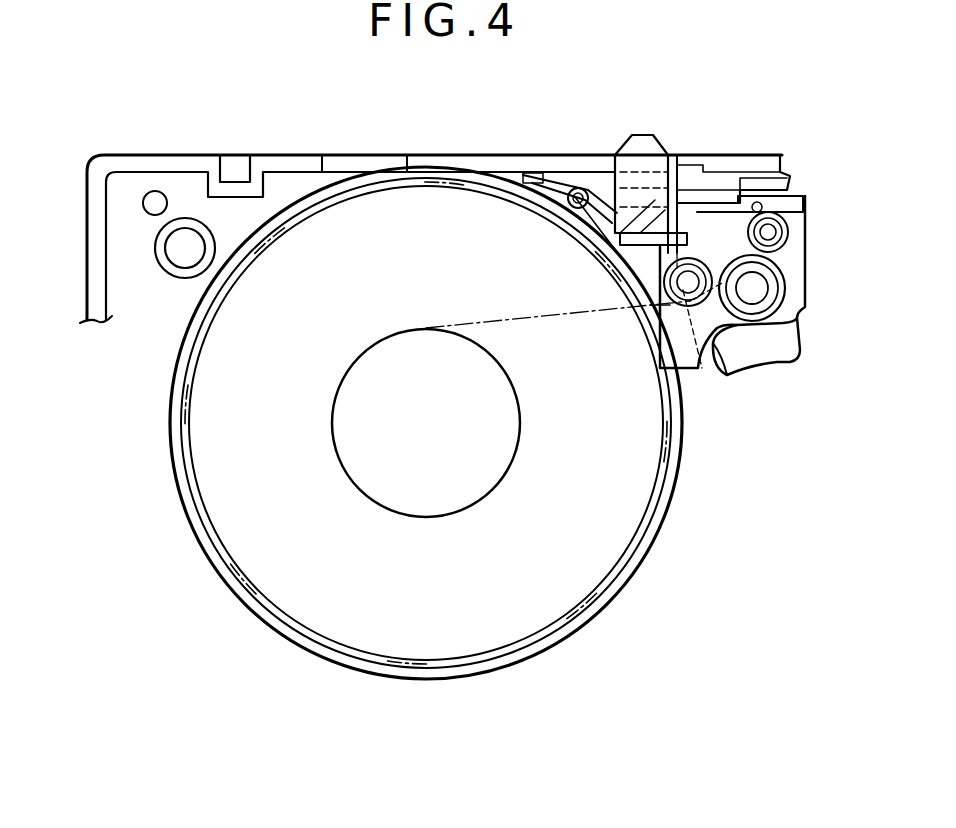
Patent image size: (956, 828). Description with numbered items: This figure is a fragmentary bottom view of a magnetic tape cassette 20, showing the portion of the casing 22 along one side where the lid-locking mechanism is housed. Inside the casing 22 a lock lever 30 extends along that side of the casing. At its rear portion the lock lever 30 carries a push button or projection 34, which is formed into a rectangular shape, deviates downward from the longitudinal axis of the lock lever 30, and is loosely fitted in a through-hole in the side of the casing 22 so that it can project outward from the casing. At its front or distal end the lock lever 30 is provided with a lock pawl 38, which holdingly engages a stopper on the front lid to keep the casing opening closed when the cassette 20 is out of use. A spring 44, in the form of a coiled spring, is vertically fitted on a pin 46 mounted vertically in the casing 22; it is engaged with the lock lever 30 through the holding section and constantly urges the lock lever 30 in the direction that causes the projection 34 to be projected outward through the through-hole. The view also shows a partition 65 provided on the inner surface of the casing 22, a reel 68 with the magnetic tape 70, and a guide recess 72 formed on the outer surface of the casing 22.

The magnetic tape cassette 20 is at (341, 138).
The casing 22 is at (168, 159).
The guide recess 72 is at (235, 160).
The push button or projection 34 is at (623, 138).
The lock lever 30 is at (720, 178).
The lock pawl 38 is at (788, 175).
The spring 44 is at (540, 206).
The pin 46 is at (570, 232).
The partition 65 is at (607, 262).
The magnetic tape 70 is at (530, 320).
The reel 68 is at (663, 527).